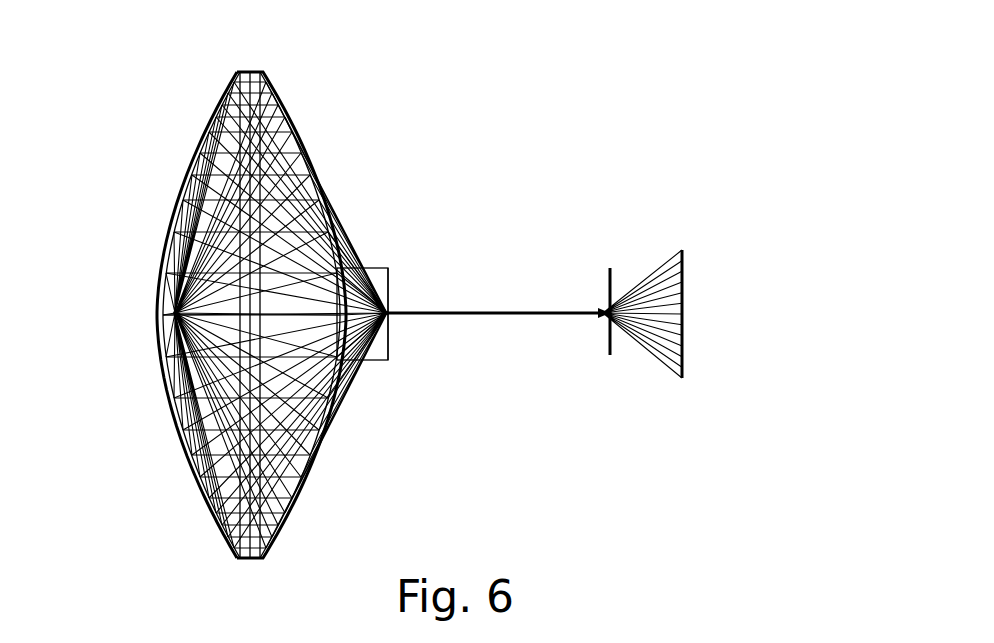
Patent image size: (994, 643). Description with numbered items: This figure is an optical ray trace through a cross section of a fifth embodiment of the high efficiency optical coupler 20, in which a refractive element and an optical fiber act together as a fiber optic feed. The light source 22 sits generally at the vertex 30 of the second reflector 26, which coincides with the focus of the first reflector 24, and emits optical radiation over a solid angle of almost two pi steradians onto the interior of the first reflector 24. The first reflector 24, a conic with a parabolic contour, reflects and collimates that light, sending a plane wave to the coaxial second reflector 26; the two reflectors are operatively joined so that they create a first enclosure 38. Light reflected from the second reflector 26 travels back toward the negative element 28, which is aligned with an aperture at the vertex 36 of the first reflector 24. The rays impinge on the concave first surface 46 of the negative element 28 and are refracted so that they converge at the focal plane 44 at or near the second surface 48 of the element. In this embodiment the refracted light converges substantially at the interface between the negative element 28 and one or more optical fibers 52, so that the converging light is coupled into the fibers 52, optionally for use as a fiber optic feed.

The high efficiency optical coupler 20 is at (552, 112).
The light source 22 is at (175, 313).
The first reflector 24 is at (312, 157).
The second reflector 26 is at (213, 118).
The negative element 28 is at (358, 268).
The vertex of the second reflector 30 is at (175, 316).
The vertex of the first reflector 36 is at (337, 312).
The first enclosure 38 is at (268, 123).
The focal plane 44 is at (393, 316).
The concave first surface 46 is at (337, 278).
The second surface 48 is at (390, 277).
The optical fibers 52 is at (515, 318).